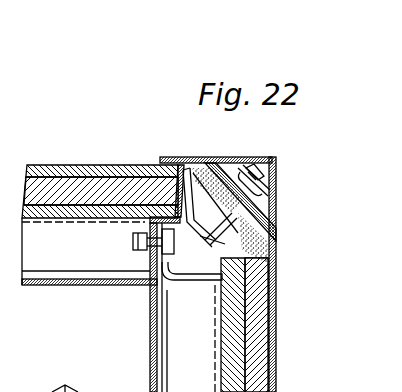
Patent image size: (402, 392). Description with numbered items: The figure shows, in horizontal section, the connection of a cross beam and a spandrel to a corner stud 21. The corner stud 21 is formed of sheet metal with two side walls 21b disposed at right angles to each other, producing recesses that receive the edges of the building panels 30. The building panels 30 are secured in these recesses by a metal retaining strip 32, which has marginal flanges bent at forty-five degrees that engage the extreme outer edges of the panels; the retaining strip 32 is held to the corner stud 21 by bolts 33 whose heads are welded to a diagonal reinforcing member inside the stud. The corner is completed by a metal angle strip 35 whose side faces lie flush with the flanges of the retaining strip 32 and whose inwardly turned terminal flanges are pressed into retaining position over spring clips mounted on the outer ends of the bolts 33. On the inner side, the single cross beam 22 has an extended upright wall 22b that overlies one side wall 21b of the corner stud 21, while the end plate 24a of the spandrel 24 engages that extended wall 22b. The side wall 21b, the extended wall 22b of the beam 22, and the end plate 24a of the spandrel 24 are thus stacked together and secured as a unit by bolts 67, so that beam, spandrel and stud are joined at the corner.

The building panel 30 is at (57, 165).
The corner stud 21 is at (276, 280).
The side wall 21b is at (96, 238).
The beam 22 is at (85, 374).
The extended upright wall 22b is at (145, 225).
The spandrel 24 is at (119, 286).
The end plate 24a is at (140, 272).
The retaining strip 32 is at (278, 233).
The bolt 33 is at (211, 252).
The angle strip 35 is at (280, 177).
The bolt 67 is at (130, 250).